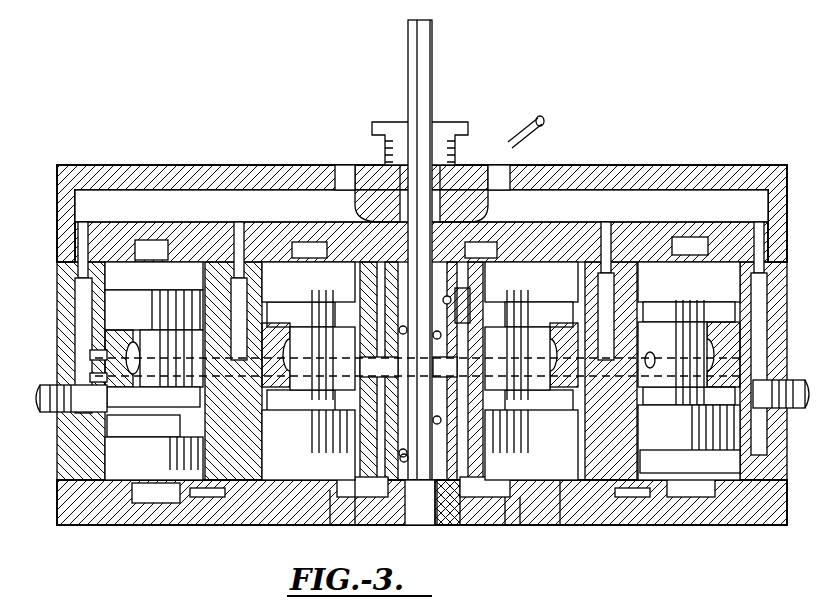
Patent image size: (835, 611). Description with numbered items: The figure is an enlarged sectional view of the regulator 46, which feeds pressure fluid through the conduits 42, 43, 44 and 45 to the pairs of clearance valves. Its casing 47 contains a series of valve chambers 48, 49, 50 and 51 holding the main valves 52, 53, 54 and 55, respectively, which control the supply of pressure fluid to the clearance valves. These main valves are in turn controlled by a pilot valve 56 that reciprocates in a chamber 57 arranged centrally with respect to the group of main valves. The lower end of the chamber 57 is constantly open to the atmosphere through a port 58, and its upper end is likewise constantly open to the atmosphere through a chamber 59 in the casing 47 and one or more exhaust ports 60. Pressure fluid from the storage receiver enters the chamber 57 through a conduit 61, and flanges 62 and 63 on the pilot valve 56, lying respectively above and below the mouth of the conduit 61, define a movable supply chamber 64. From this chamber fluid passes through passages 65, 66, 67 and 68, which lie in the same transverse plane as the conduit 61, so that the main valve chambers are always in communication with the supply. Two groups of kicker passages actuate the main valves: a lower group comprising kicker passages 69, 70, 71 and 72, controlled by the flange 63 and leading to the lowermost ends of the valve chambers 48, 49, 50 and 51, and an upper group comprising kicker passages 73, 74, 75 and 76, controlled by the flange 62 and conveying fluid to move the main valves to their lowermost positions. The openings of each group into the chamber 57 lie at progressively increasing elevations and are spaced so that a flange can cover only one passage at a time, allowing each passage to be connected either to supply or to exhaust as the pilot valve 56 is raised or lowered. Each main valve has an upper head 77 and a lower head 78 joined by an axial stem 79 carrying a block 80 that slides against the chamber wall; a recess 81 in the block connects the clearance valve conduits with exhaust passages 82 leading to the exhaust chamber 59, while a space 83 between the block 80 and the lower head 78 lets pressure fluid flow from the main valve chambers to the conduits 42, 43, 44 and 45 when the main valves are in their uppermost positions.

The conduit 42 is at (75, 400).
The conduit 43 is at (212, 388).
The conduit 44 is at (692, 405).
The conduit 45 is at (795, 385).
The regulator 46 is at (592, 165).
The casing 47 is at (632, 165).
The valve chamber 48 is at (135, 520).
The valve chamber 49 is at (225, 495).
The valve chamber 50 is at (522, 525).
The valve chamber 51 is at (650, 497).
The main valve 52 is at (152, 503).
The main valve 53 is at (345, 497).
The main valve 54 is at (561, 525).
The main valve 55 is at (700, 497).
The pilot valve 56 is at (411, 465).
The valve chamber 57 is at (480, 500).
The port 58 is at (408, 505).
The chamber 59 is at (240, 213).
The exhaust port 60 is at (345, 170).
The conduit 61 is at (525, 128).
The flange 62 is at (388, 185).
The flange 63 is at (448, 510).
The movable chamber 64 is at (436, 510).
The passage 65 is at (330, 362).
The passage 66 is at (370, 372).
The passage 67 is at (470, 368).
The passage 68 is at (650, 360).
The kicker passage 69 is at (332, 525).
The kicker passage 70 is at (357, 525).
The kicker passage 71 is at (508, 525).
The kicker passage 72 is at (480, 370).
The kicker passage 73 is at (305, 244).
The kicker passage 74 is at (366, 175).
The kicker passage 75 is at (470, 300).
The kicker passage 76 is at (487, 150).
The upper head 77 is at (330, 242).
The lower head 78 is at (305, 455).
The axial stem 79 is at (155, 330).
The block 80 is at (100, 355).
The recess 81 is at (100, 377).
The exhaust passage 82 is at (243, 225).
The space 83 is at (300, 404).